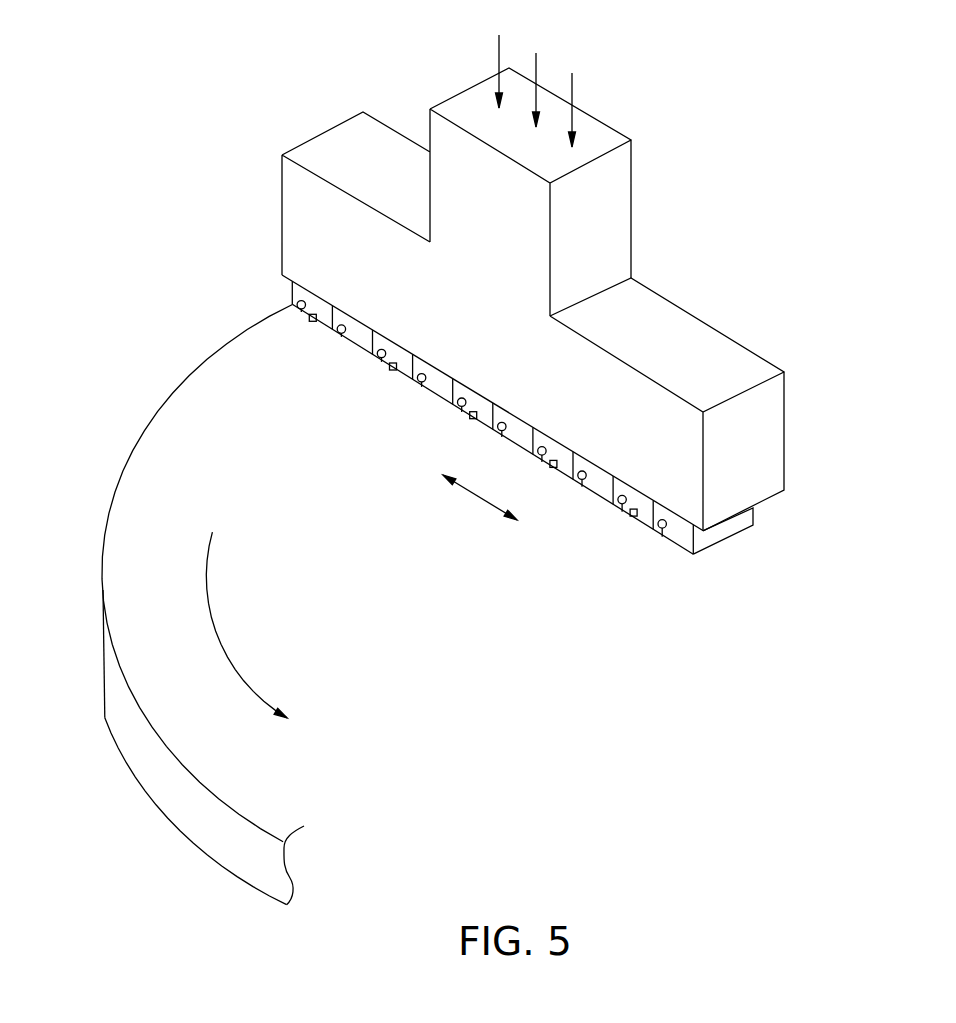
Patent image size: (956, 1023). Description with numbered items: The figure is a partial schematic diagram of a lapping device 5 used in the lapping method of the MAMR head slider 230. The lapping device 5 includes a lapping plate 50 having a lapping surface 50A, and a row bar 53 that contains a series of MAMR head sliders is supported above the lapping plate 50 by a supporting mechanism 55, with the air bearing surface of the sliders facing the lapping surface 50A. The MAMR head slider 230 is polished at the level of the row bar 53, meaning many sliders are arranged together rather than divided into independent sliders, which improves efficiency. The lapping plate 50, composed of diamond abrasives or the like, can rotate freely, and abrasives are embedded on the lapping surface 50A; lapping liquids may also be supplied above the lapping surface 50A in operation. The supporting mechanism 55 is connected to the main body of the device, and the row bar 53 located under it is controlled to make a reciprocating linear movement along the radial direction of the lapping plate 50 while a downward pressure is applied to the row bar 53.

The lapping device 5 is at (130, 121).
The supporting mechanism 55 is at (303, 222).
The MAMR head slider 230 is at (297, 295).
The row bar 53 is at (703, 540).
The lapping surface 50A is at (178, 438).
The lapping plate 50 is at (182, 810).